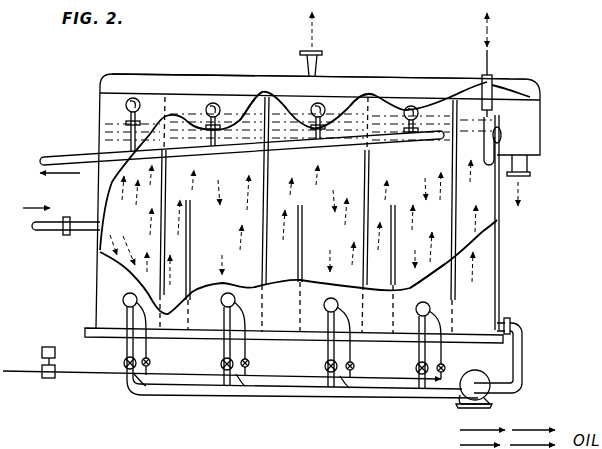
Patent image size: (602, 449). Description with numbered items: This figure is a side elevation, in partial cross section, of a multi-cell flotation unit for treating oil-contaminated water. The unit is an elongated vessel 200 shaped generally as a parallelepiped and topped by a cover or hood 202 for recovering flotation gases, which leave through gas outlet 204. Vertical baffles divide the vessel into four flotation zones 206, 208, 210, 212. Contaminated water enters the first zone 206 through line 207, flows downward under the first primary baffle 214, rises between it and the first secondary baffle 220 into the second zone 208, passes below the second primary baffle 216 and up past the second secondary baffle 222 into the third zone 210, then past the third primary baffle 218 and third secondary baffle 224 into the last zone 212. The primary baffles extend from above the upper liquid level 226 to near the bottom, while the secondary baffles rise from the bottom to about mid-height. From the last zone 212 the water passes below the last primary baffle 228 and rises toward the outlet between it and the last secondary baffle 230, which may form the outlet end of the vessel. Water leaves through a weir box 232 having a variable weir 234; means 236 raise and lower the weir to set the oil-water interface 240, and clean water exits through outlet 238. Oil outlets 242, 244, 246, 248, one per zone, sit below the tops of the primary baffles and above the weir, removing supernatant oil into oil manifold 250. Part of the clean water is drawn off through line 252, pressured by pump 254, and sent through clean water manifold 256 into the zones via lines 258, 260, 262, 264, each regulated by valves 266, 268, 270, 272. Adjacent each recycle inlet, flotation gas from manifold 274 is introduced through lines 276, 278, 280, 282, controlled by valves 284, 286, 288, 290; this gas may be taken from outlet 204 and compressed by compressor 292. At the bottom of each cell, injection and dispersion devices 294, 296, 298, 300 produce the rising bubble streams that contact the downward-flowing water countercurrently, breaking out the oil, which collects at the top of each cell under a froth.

The elongated vessel 200 is at (110, 272).
The cover or hood 202 is at (180, 85).
The gas outlet 204 is at (322, 52).
The first flotation zone 206 is at (146, 235).
The inlet line 207 is at (38, 232).
The second flotation zone 208 is at (221, 247).
The third flotation zone 210 is at (346, 249).
The last flotation zone 212 is at (436, 245).
The first primary baffle 214 is at (177, 172).
The second primary baffle 216 is at (296, 169).
The third primary baffle 218 is at (375, 170).
The first secondary baffle 220 is at (191, 263).
The second secondary baffle 222 is at (303, 289).
The third secondary baffle 224 is at (396, 293).
The upper liquid level 226 is at (255, 100).
The last primary baffle 228 is at (456, 182).
The last secondary baffle 230 is at (499, 222).
The weir box 232 is at (510, 100).
The variable weir 234 is at (500, 138).
The weir adjusting means 236 is at (491, 80).
The clean water outlet 238 is at (527, 165).
The oil-water interface 240 is at (382, 90).
The first oil outlet 242 is at (133, 97).
The second oil outlet 244 is at (216, 103).
The third oil outlet 246 is at (321, 103).
The fourth oil outlet 248 is at (413, 106).
The oil manifold 250 is at (76, 153).
The clean water line 252 is at (512, 322).
The pump 254 is at (460, 407).
The clean water manifold 256 is at (402, 399).
The first recycle water line 258 is at (124, 346).
The second recycle water line 260 is at (223, 352).
The third recycle water line 262 is at (327, 353).
The fourth recycle water line 264 is at (418, 353).
The first water valve 266 is at (124, 363).
The second water valve 268 is at (221, 364).
The third water valve 270 is at (325, 367).
The fourth water valve 272 is at (416, 369).
The flotation gas manifold 274 is at (72, 373).
The first gas line 276 is at (148, 357).
The second gas line 278 is at (246, 358).
The third gas line 280 is at (353, 353).
The fourth gas line 282 is at (447, 366).
The first gas valve 284 is at (136, 384).
The second gas valve 286 is at (234, 388).
The third gas valve 288 is at (333, 389).
The fourth gas valve 290 is at (453, 373).
The compressor 292 is at (43, 375).
The first injection and dispersion device 294 is at (123, 299).
The second injection and dispersion device 296 is at (217, 312).
The third injection and dispersion device 298 is at (323, 304).
The fourth injection and dispersion device 300 is at (440, 301).